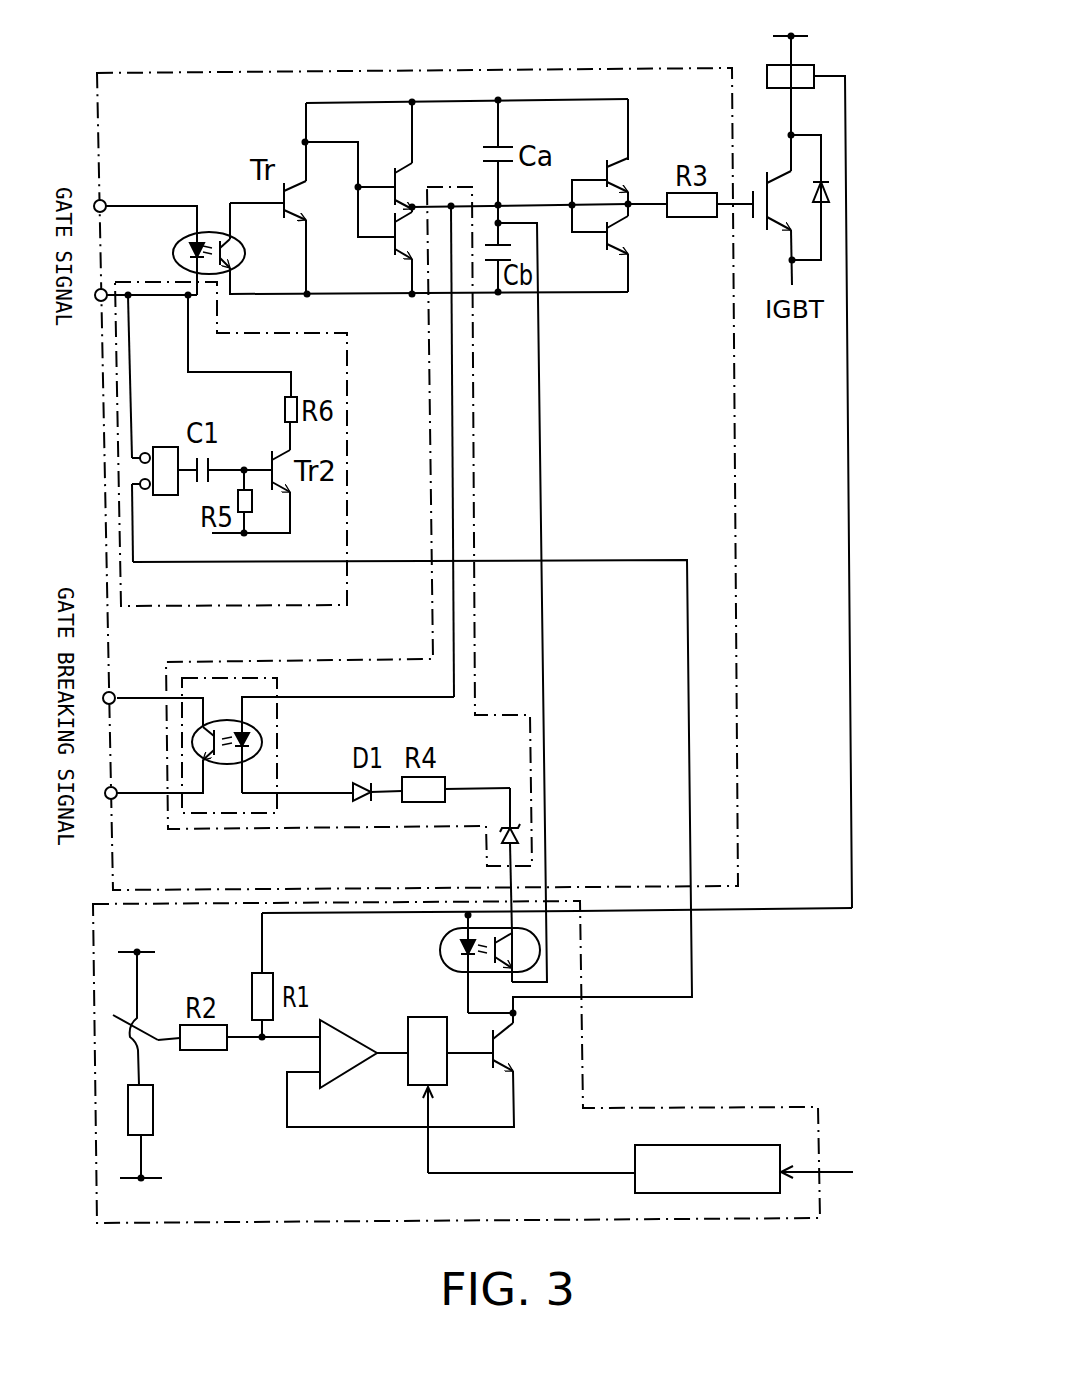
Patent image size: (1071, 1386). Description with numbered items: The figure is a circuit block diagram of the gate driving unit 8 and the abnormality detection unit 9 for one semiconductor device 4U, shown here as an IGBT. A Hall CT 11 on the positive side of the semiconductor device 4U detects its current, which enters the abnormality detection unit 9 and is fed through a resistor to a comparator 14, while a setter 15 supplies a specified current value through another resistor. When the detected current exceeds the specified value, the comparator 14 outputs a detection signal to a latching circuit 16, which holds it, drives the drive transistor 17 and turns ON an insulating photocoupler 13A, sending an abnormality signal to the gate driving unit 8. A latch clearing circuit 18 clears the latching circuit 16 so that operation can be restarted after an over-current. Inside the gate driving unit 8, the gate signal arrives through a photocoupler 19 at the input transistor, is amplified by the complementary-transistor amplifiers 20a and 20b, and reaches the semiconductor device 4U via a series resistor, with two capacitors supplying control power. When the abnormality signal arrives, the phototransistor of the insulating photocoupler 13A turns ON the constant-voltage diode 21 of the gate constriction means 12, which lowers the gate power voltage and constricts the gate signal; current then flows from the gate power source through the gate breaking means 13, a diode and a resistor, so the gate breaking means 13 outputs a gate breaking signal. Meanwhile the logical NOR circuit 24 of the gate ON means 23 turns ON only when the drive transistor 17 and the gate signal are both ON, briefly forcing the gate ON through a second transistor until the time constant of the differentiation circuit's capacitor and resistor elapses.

The gate driving unit 8 is at (493, 65).
The Hall CT 11 is at (821, 60).
The semiconductor device 4U is at (830, 168).
The photocoupler 19 is at (213, 218).
The amplifier 20a is at (391, 168).
The amplifier 20b is at (597, 165).
The gate constriction means 12 is at (427, 337).
The gate ON means 23 is at (350, 497).
The logical NOR circuit 24 is at (168, 445).
The gate breaking means 13 is at (282, 731).
The constant-voltage diode 21 is at (520, 822).
The insulating photocoupler 13A is at (440, 937).
The latching circuit 16 is at (425, 1017).
The comparator 14 is at (353, 1036).
The drive transistor 17 is at (520, 1048).
The abnormality detection unit 9 is at (456, 1062).
The setter 15 is at (123, 1056).
The latch clearing circuit 18 is at (706, 1143).